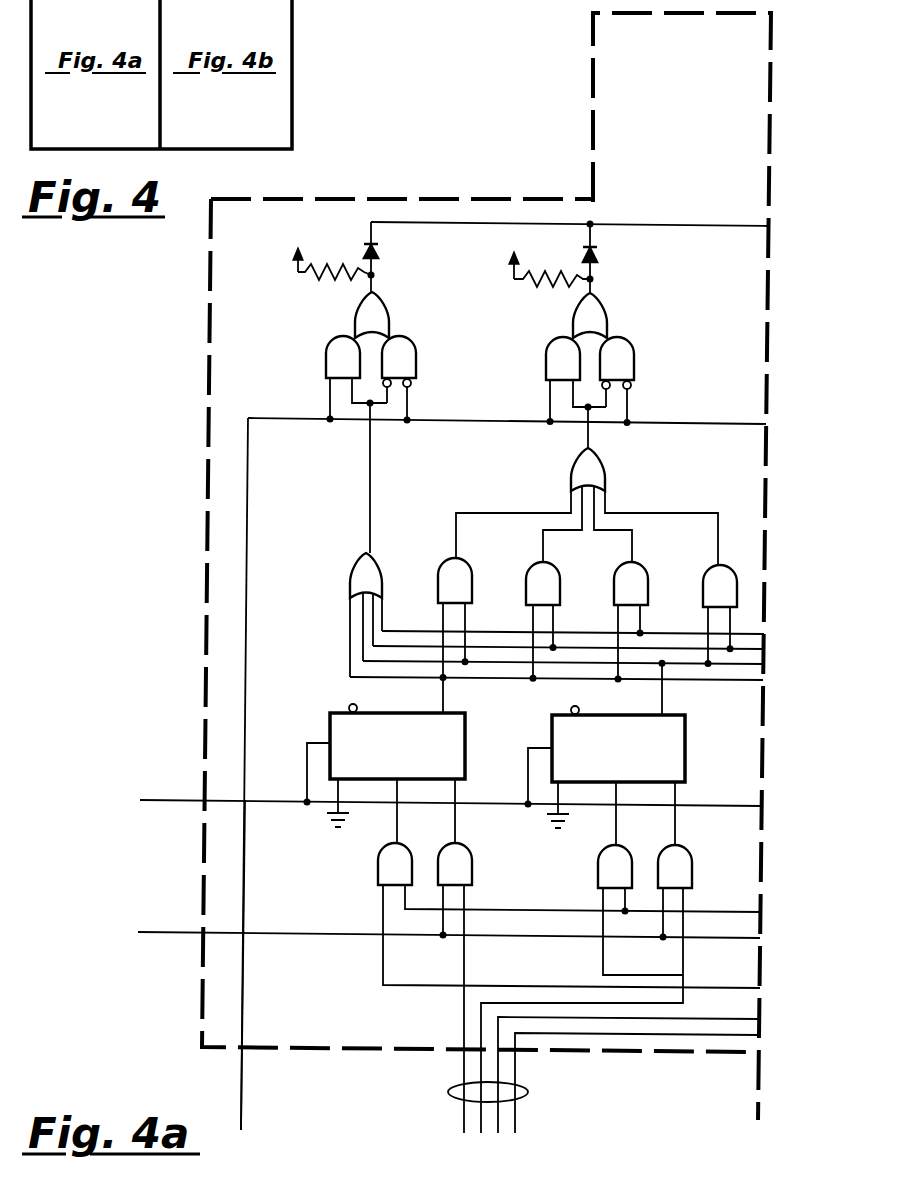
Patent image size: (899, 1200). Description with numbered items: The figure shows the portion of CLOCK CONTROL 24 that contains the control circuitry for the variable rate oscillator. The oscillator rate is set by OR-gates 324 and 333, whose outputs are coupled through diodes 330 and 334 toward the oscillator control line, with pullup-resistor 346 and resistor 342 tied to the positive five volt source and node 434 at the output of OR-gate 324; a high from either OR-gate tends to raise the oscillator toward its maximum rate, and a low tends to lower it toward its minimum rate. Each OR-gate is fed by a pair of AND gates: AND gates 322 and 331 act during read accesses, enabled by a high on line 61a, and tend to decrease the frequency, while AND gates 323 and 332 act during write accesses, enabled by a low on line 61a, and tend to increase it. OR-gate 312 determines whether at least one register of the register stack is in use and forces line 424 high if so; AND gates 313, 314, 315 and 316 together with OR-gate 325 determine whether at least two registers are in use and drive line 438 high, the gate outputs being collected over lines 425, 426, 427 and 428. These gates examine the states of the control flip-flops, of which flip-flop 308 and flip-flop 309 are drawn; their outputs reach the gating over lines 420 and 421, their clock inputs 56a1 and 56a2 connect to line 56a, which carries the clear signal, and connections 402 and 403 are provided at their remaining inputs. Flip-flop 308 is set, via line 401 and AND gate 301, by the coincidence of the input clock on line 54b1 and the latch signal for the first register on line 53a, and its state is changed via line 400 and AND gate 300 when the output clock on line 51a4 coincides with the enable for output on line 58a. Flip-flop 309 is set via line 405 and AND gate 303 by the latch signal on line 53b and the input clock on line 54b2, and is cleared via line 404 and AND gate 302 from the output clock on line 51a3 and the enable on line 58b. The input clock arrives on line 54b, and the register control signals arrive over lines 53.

The CLOCK CONTROL 24 is at (593, 58).
The diode 330 is at (378, 252).
The node 434 is at (377, 281).
The pullup-resistor 346 is at (342, 276).
The OR-gate 324 is at (388, 310).
The AND gate 322 is at (324, 363).
The AND gate 323 is at (415, 346).
The diode 334 is at (597, 257).
The resistor 342 is at (558, 282).
The OR-gate 333 is at (606, 308).
The AND gate 331 is at (544, 367).
The AND gate 332 is at (635, 350).
The line 438 is at (587, 438).
The OR-gate 325 is at (603, 461).
The line 424 is at (368, 488).
The line 425 is at (522, 509).
The line 428 is at (652, 513).
The line 426 is at (542, 530).
The line 427 is at (633, 530).
The OR-gate 312 is at (384, 582).
The AND gate 313 is at (473, 586).
The AND gate 314 is at (561, 588).
The AND gate 315 is at (649, 590).
The AND gate 316 is at (738, 573).
The FF4 308 is at (364, 712).
The line 420 is at (445, 698).
The FF5 309 is at (585, 714).
The line 421 is at (665, 699).
The clock input line 56a1 is at (306, 760).
The clock input line 56a2 is at (527, 762).
The line 56a is at (168, 798).
The ground connection 402 is at (326, 811).
The ground connection 403 is at (546, 812).
The output line E 400 is at (395, 829).
The line 401 is at (453, 837).
The output line E 404 is at (614, 830).
The line 405 is at (673, 838).
The AND gate 300 is at (377, 873).
The AND gate 301 is at (473, 863).
The AND gate 302 is at (597, 874).
The AND gate 303 is at (693, 863).
The line 58a is at (382, 902).
The line 53a is at (470, 899).
The output line 58b is at (602, 900).
The line 53b is at (688, 900).
The line 54b is at (168, 930).
The line 51a4 is at (406, 896).
The line 54b1 is at (444, 918).
The line 51a3 is at (627, 897).
The line 54b2 is at (664, 920).
The line 61a is at (243, 1089).
The lines 53 is at (528, 1093).